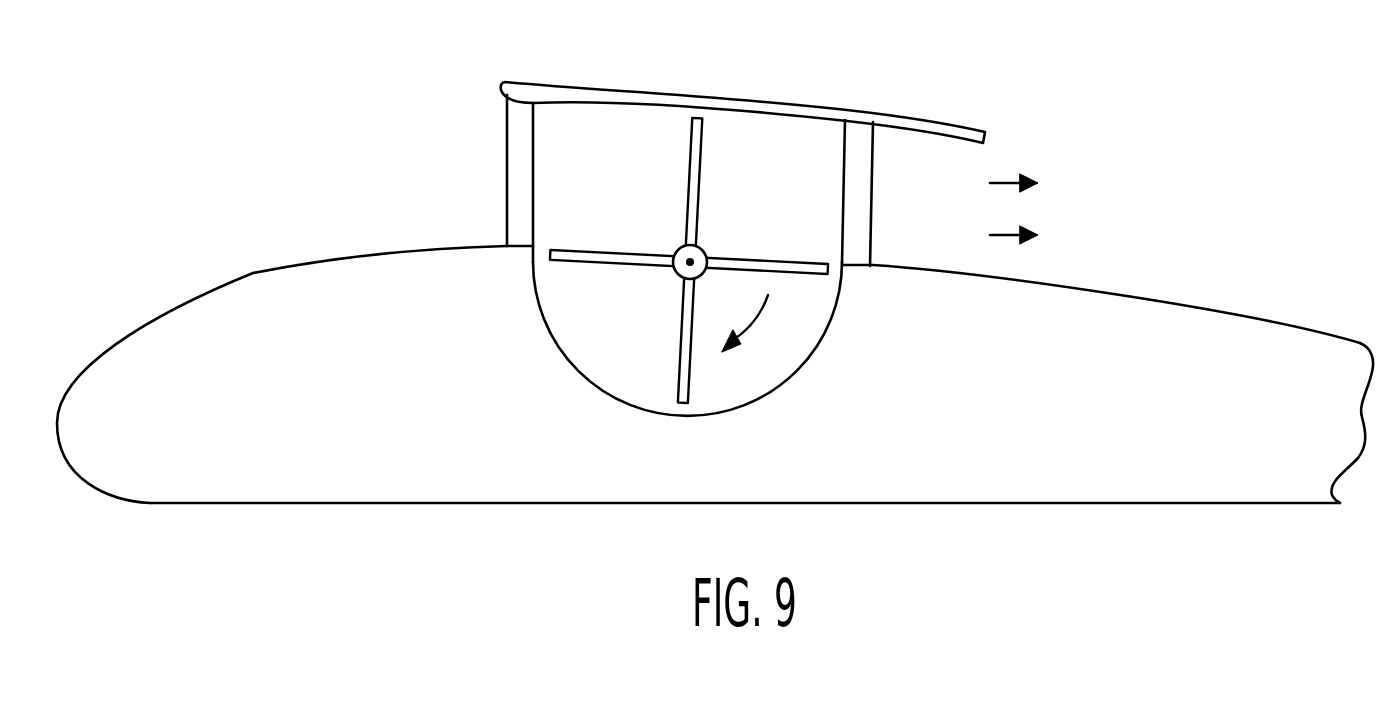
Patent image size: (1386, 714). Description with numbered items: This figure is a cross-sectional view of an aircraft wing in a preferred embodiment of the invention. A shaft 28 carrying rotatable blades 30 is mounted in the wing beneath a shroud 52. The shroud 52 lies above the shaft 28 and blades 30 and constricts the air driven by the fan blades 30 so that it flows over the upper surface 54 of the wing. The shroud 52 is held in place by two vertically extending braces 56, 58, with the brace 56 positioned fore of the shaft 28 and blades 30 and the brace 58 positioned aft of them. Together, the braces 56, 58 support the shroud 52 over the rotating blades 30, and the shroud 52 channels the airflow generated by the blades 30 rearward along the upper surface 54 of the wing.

The shaft 28 is at (700, 252).
The rotatable blades 30 is at (683, 172).
The shroud 52 is at (790, 100).
The upper surface 54 is at (1162, 302).
The vertically extending brace 56 is at (507, 177).
The vertically extending brace 58 is at (862, 192).